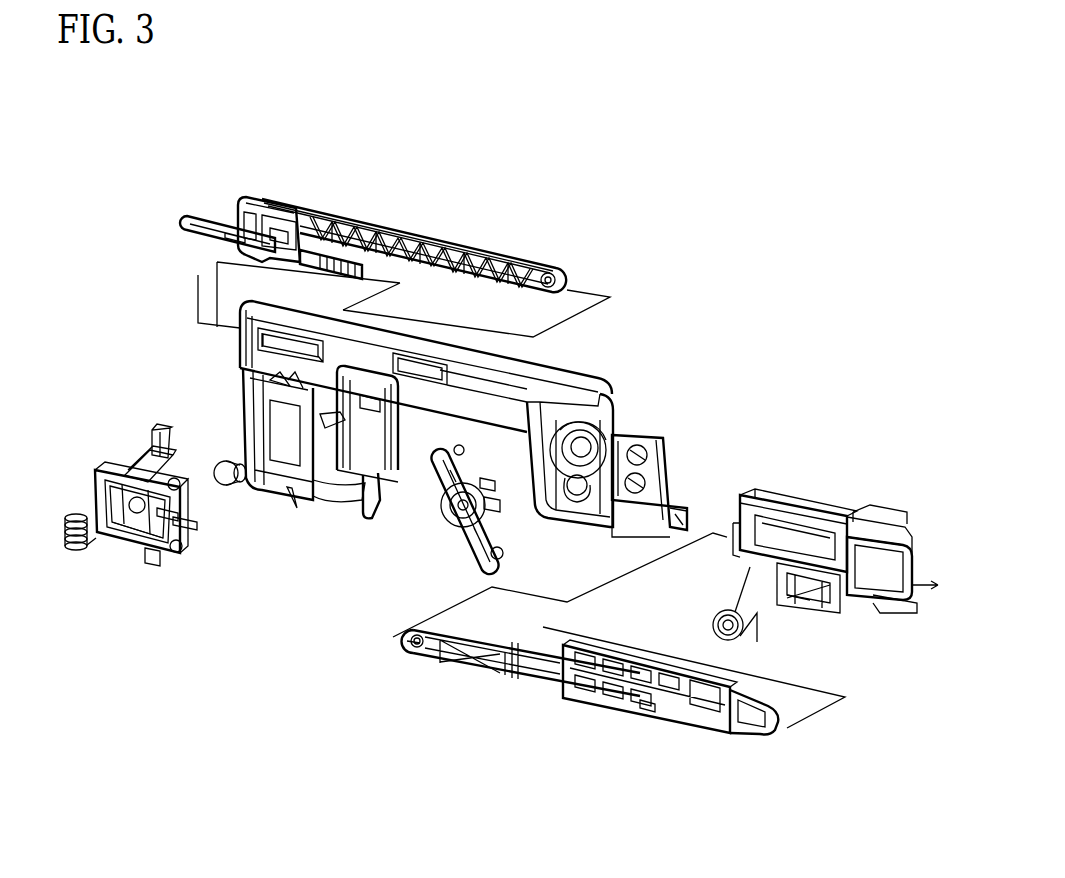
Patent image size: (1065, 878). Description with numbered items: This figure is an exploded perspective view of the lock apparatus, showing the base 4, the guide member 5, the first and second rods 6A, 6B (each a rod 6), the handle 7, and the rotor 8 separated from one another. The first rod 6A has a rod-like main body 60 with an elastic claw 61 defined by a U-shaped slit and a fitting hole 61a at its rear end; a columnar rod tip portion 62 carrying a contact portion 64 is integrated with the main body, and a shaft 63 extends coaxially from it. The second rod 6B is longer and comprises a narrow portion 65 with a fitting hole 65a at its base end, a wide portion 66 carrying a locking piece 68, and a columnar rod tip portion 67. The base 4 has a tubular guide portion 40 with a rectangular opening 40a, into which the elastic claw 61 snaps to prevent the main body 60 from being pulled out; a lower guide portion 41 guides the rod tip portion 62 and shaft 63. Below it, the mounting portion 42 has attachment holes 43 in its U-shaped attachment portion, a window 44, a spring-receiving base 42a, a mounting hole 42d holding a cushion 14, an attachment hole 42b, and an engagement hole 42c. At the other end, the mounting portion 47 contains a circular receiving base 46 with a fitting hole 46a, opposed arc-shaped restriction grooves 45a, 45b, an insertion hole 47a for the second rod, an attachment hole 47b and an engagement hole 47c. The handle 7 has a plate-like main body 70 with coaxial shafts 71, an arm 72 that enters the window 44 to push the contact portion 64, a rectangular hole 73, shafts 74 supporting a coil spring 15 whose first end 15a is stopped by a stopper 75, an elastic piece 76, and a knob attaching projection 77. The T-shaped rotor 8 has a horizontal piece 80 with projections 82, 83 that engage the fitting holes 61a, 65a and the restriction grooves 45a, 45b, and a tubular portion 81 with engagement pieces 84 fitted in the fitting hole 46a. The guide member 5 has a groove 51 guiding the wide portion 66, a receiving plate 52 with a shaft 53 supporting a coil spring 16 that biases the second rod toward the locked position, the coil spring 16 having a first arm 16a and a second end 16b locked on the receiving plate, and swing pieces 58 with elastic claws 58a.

The base 4 is at (464, 434).
The guide portion 40 is at (464, 434).
The opening 40a is at (323, 358).
The lower guide portion 41 is at (240, 358).
The mounting portion 42 is at (312, 452).
The base for receiving a spring 42a is at (292, 487).
The attachment hole 42b is at (385, 441).
The engagement hole 42c is at (397, 420).
The mounting hole 42d is at (363, 512).
The attachment holes 43 is at (237, 364).
The window 44 is at (263, 411).
The restriction groove 45a is at (587, 392).
The restriction groove 45b is at (578, 502).
The circular receiving base 46 is at (600, 417).
The fitting hole 46a is at (591, 447).
The mounting portion 47 is at (692, 483).
The insertion hole 47a is at (705, 522).
The attachment hole 47b is at (645, 455).
The engagement hole 47c is at (645, 485).
The guide member 5 is at (837, 563).
The groove 51 is at (810, 527).
The receiving plate 52 is at (835, 610).
The shaft 53 is at (777, 603).
The swing pieces 58 is at (888, 569).
The elastic claw 58a is at (885, 505).
The rod 6 is at (402, 239).
The first rod 6A is at (402, 239).
The second rod 6B is at (586, 702).
The main body 60 is at (414, 232).
The elastic claw 61 is at (280, 200).
The fitting hole 61a is at (546, 291).
The rod tip portion 62 is at (205, 222).
The shaft 63 is at (363, 275).
The contact portion 64 is at (347, 228).
The narrow portion 65 is at (498, 681).
The fitting hole 65a is at (409, 644).
The wide portion 66 is at (658, 722).
The rod tip portion 67 is at (777, 725).
The locking piece 68 is at (645, 708).
The handle 7 is at (135, 490).
The main body 70 is at (135, 490).
The shafts 71 is at (133, 462).
The arm 72 is at (158, 425).
The hole 73 is at (101, 500).
The shaft 74 is at (133, 547).
The stopper 75 is at (167, 507).
The elastic piece 76 is at (196, 525).
The knob attaching projection 77 is at (180, 484).
The rotor 8 is at (474, 502).
The horizontal piece 80 is at (447, 515).
The tubular portion 81 is at (488, 483).
The projection 82 is at (462, 455).
The projection 83 is at (503, 554).
The engagement pieces 84 is at (494, 510).
The cushion 14 is at (238, 483).
The coil spring 15 is at (58, 547).
The first end 15a is at (97, 533).
The coil spring 16 is at (723, 616).
The first spring arm 16a is at (747, 570).
The second end 16b is at (762, 640).